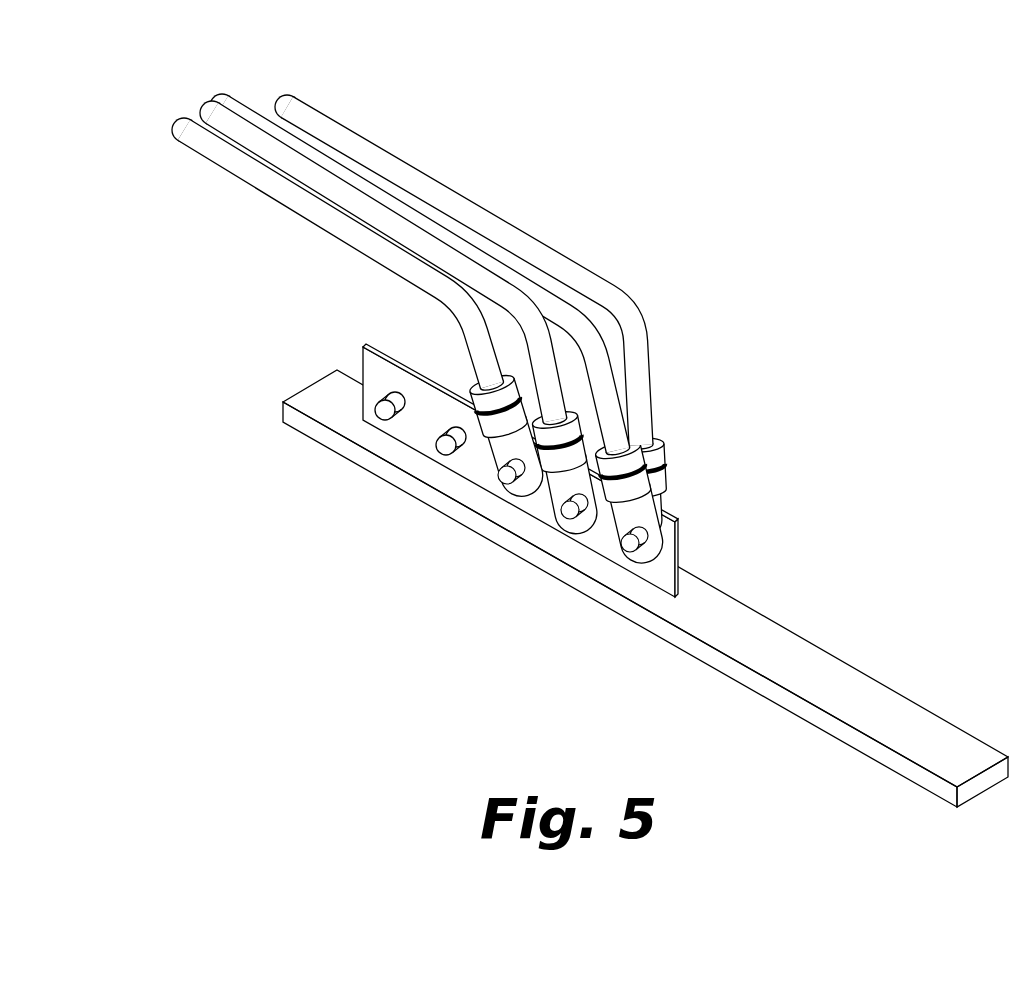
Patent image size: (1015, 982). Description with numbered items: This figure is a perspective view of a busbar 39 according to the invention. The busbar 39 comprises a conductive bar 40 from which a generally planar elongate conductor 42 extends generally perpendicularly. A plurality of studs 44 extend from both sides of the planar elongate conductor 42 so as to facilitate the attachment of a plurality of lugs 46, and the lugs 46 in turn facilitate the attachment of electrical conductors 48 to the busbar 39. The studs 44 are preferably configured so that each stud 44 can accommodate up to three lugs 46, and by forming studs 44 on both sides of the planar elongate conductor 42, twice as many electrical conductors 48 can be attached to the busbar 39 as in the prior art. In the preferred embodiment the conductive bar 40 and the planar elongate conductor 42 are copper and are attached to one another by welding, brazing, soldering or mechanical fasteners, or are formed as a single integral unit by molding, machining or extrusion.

The busbar 39 is at (578, 413).
The conductive bar 40 is at (923, 720).
The planar elongate conductor 42 is at (678, 547).
The studs 44 is at (383, 420).
The lugs 46 is at (500, 455).
The electrical conductors 48 is at (270, 51).